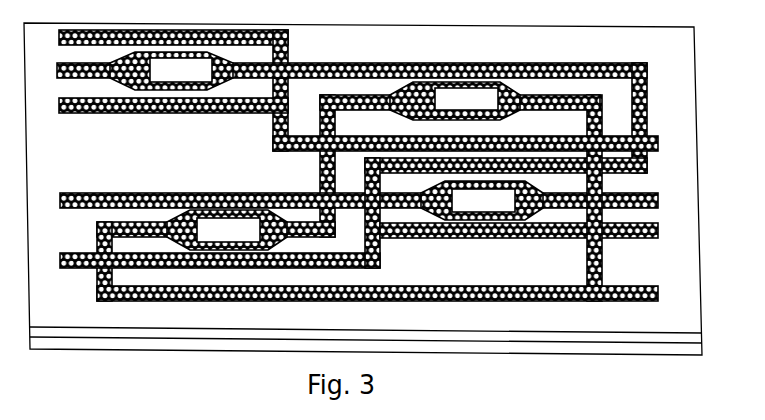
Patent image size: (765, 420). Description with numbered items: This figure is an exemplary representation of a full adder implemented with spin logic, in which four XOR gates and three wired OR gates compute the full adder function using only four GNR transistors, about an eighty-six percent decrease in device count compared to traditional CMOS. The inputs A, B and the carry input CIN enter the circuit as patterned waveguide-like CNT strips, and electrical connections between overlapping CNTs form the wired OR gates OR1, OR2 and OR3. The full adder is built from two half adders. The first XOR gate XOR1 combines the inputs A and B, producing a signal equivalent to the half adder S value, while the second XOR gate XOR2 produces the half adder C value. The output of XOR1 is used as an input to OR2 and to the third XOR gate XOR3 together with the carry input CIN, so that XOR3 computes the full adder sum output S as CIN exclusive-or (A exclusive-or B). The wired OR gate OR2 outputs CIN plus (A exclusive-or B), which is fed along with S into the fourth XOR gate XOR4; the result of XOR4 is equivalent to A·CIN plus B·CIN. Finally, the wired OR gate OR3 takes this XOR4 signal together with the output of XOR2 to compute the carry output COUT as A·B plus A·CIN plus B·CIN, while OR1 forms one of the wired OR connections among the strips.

The input A is at (51, 34).
The input B is at (51, 101).
The sum output S is at (60, 200).
The first XOR gate XOR1 is at (171, 71).
The second XOR gate XOR2 is at (460, 101).
The third XOR gate XOR3 is at (482, 200).
The fourth XOR gate XOR4 is at (216, 230).
The first wired OR gate OR1 is at (357, 150).
The second wired OR gate OR2 is at (241, 229).
The third wired OR gate OR3 is at (377, 226).
The carry input CIN is at (656, 226).
The carry output COUT is at (645, 293).